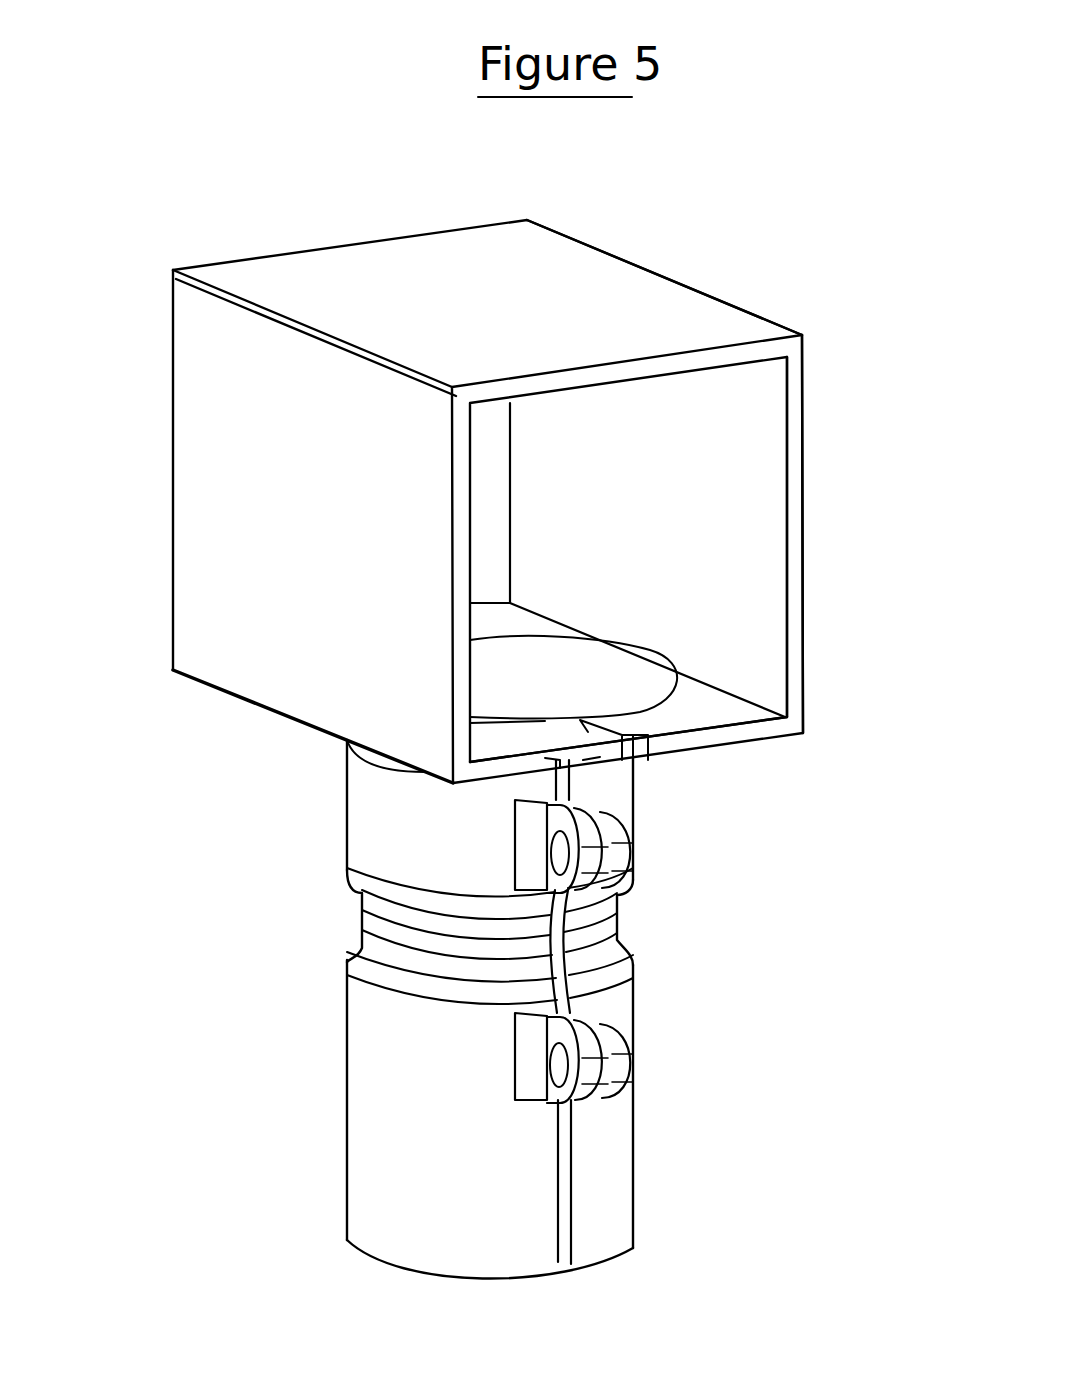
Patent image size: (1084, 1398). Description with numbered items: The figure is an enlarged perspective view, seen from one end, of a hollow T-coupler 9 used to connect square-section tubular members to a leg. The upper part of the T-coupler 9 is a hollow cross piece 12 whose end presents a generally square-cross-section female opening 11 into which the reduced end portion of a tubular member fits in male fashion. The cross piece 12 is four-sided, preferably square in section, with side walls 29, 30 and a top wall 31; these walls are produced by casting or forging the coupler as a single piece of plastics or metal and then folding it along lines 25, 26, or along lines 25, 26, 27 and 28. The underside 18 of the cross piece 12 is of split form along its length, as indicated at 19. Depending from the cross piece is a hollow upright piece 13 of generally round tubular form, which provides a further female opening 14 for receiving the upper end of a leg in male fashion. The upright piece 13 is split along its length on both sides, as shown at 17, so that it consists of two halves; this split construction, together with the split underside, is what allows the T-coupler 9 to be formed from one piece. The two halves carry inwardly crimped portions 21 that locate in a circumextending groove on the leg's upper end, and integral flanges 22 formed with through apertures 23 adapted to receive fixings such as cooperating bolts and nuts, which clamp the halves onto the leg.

The T-coupler 9 is at (660, 255).
The female opening 11 is at (778, 507).
The cross piece 12 is at (208, 538).
The upright piece 13 is at (620, 1177).
The female opening 14 is at (415, 1270).
The split 17 is at (562, 787).
The underside 18 is at (707, 708).
The split 19 is at (610, 733).
The inwardly crimped portions 21 is at (363, 925).
The integral flanges 22 is at (633, 860).
The through apertures 23 is at (560, 1062).
The fold line 25 is at (250, 296).
The fold line 26 is at (750, 313).
The fold line 27 is at (265, 708).
The fold line 28 is at (773, 707).
The side wall 29 is at (207, 412).
The side wall 30 is at (728, 442).
The top wall 31 is at (450, 265).